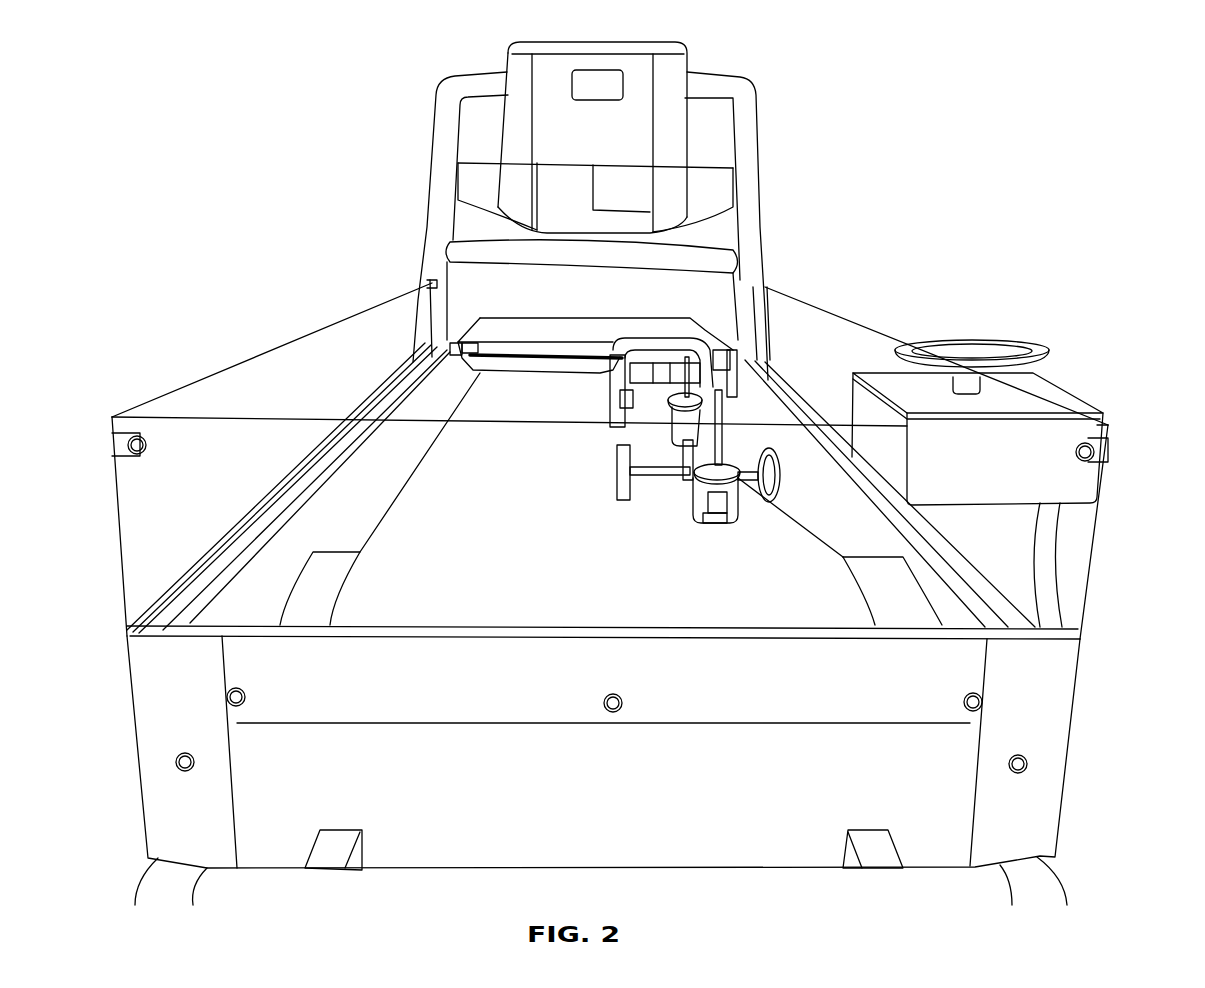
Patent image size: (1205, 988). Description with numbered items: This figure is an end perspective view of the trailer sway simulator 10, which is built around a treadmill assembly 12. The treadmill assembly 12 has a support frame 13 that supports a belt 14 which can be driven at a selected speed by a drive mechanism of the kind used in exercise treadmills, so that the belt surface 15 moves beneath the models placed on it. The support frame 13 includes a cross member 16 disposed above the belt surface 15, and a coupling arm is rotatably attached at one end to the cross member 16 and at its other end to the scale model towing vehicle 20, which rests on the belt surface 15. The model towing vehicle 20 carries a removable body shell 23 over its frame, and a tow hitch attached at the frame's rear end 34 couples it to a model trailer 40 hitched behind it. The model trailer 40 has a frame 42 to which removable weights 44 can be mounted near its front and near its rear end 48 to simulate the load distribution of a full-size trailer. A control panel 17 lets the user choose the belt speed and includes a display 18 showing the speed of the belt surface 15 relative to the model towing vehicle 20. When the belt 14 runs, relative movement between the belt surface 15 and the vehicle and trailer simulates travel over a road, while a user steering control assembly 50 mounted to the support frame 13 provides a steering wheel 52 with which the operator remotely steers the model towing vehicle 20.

The trailer sway simulator 10 is at (773, 118).
The treadmill assembly 12 is at (392, 385).
The support frame 13 is at (355, 689).
The belt 14 is at (380, 453).
The belt surface 15 is at (460, 529).
The cross member 16 is at (493, 356).
The control panel 17 is at (565, 88).
The display 18 is at (603, 90).
The scale model towing vehicle 20 is at (622, 400).
The removable body shell 23 is at (656, 342).
The rear end 34 is at (652, 398).
The model trailer 40 is at (683, 537).
The frame 42 is at (737, 420).
The removable weights 44 is at (662, 422).
The rear end 48 is at (718, 512).
The user steering control assembly 50 is at (1060, 397).
The steering wheel 52 is at (1007, 347).